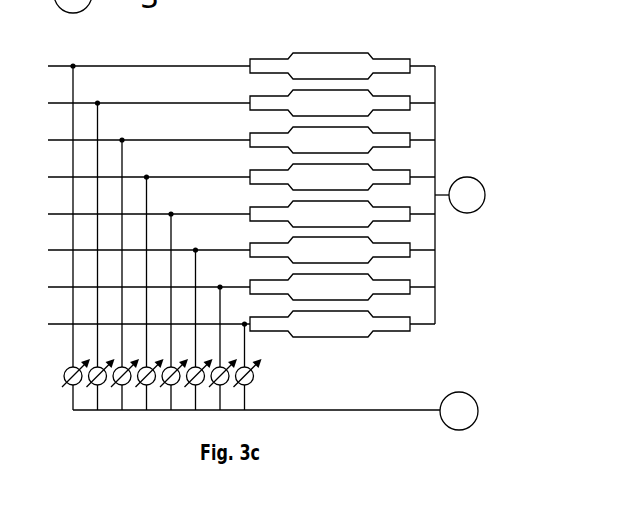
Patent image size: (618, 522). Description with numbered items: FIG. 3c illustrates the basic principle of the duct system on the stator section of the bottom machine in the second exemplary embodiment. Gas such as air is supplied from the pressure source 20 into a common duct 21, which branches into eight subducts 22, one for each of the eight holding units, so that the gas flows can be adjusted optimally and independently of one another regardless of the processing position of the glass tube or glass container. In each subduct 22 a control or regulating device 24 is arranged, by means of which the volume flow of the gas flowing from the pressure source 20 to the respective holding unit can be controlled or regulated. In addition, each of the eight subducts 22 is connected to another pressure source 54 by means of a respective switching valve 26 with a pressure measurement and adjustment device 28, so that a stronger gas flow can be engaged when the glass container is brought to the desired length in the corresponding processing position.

The subducts 22 is at (213, 63).
The control or regulating device 24 is at (331, 66).
The duct 21 is at (441, 192).
The pressure source 20 is at (462, 214).
The another pressure source 54 is at (461, 391).
The switching valve 26 is at (255, 375).
The pressure measurement and adjustment device 28 is at (215, 377).